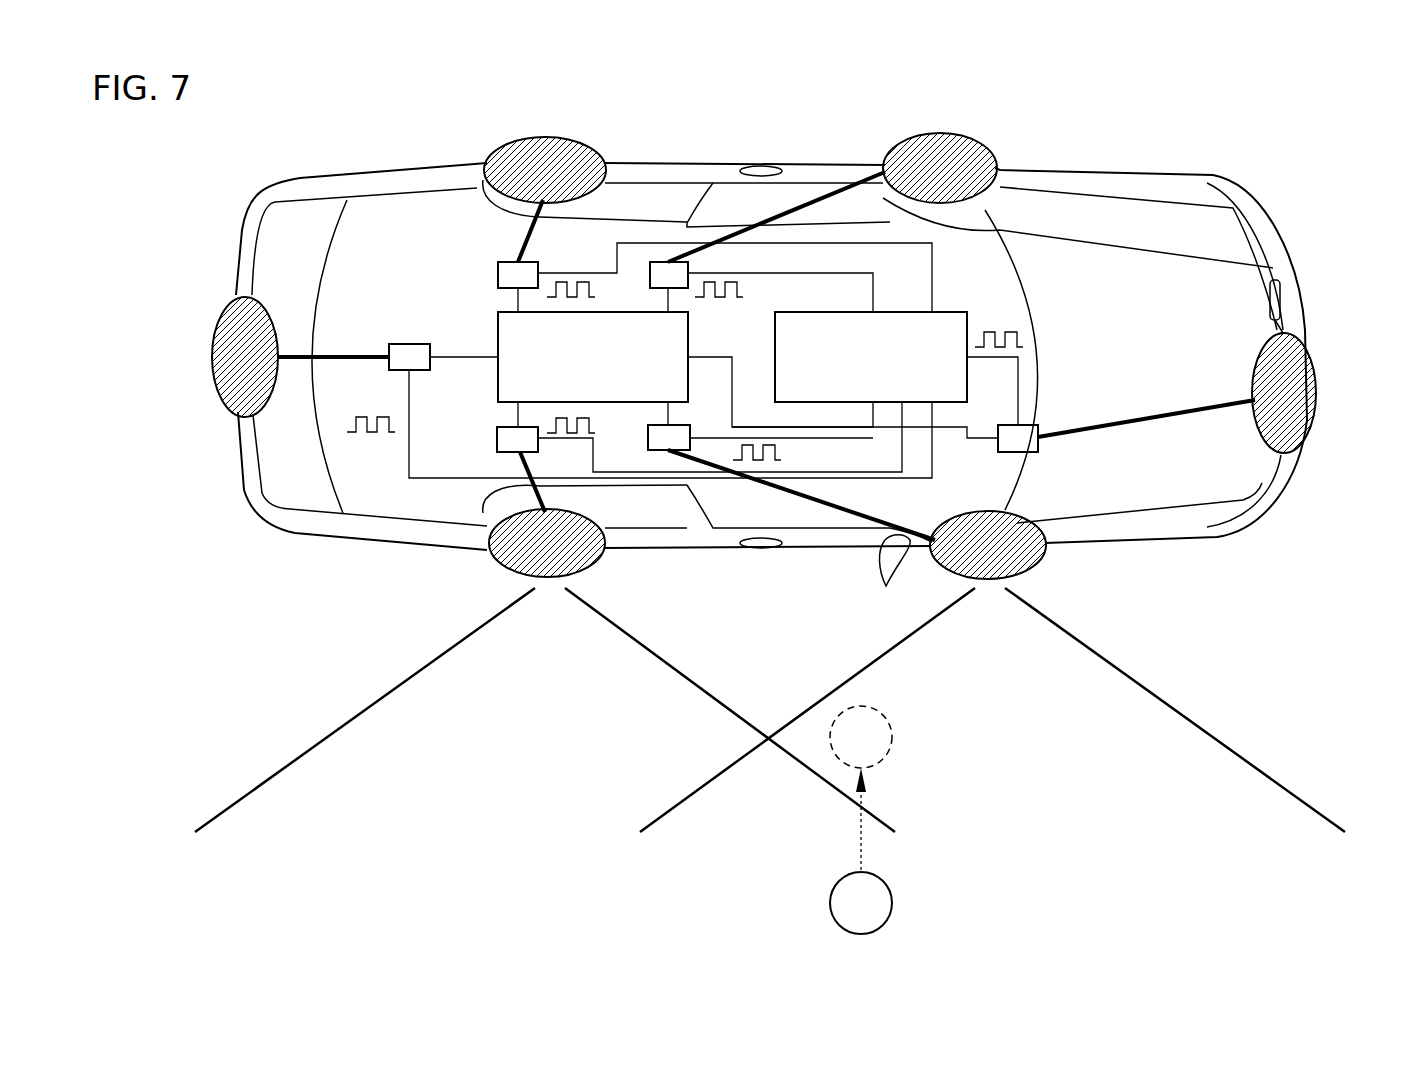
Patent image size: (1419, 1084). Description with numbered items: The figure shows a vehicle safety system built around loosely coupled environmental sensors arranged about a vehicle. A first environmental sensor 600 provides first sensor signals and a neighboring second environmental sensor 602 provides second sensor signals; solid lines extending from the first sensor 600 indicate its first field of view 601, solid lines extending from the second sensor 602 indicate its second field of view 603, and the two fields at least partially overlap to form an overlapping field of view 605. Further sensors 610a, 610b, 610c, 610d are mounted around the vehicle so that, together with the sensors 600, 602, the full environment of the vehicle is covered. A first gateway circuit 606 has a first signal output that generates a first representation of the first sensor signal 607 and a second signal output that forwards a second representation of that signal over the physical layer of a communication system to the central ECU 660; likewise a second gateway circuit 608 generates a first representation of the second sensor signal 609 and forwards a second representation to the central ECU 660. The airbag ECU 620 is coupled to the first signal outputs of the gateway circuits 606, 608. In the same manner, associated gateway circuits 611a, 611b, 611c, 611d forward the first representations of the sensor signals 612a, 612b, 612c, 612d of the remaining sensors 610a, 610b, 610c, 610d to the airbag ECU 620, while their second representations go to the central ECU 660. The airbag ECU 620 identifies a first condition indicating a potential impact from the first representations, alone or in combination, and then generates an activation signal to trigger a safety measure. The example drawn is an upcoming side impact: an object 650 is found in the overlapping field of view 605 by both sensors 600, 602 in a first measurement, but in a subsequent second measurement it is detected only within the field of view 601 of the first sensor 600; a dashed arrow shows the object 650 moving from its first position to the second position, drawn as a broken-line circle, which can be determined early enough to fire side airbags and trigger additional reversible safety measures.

The first environmental sensor 600 is at (1030, 565).
The first field of view 601 is at (1115, 762).
The second environmental sensor 602 is at (515, 562).
The second field of view 603 is at (432, 762).
The overlapping field of view 605 is at (788, 836).
The first gateway circuit 606 is at (660, 450).
The first representation of the first sensor signal 607 is at (780, 462).
The second gateway circuit 608 is at (497, 438).
The first representation of the second sensor signal 609 is at (595, 433).
The environmental sensor 610a is at (215, 357).
The environmental sensor 610b is at (548, 150).
The environmental sensor 610c is at (942, 150).
The environmental sensor 610d is at (1317, 387).
The gateway circuit 611a is at (408, 343).
The gateway circuit 611b is at (497, 273).
The gateway circuit 611c is at (658, 262).
The gateway circuit 611d is at (1038, 440).
The first representation of the sensor signal 612a is at (347, 426).
The first representation of the sensor signal 612b is at (593, 282).
The first representation of the sensor signal 612c is at (735, 282).
The first representation of the sensor signal 612d is at (1025, 333).
The airbag ECU 620 is at (893, 370).
The object 650 is at (877, 766).
The central ECU 660 is at (616, 370).